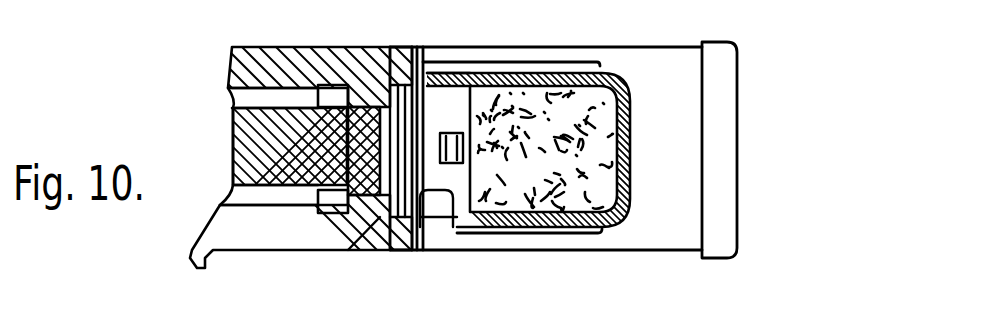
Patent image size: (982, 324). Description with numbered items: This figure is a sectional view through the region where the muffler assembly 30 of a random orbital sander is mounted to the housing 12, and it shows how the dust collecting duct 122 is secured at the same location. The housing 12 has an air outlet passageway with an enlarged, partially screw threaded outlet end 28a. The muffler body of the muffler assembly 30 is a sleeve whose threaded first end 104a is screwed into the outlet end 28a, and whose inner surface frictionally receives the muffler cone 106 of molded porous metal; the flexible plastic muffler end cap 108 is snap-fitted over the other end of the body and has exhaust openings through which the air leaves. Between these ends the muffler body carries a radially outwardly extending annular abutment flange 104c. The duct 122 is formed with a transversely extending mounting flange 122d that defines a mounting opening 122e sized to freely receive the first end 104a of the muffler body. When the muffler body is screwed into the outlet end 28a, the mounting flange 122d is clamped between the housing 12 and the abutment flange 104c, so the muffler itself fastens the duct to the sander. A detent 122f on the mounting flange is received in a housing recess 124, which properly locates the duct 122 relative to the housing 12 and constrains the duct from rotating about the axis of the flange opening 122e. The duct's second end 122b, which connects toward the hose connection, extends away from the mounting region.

The housing 12 is at (257, 40).
The outlet end of air outlet passageway 28a is at (240, 96).
The muffler cone 106 is at (243, 128).
The housing recess 124 is at (368, 228).
The duct 122 is at (674, 38).
The second end of duct 122b is at (690, 161).
The mounting flange 122d is at (402, 45).
The detent 122f is at (392, 250).
The first end of muffler body 104a is at (345, 250).
The abutment flange 104c is at (420, 67).
The muffler end cap 108 is at (547, 72).
The mounting opening 122e is at (452, 193).
The muffler assembly 30 is at (558, 258).